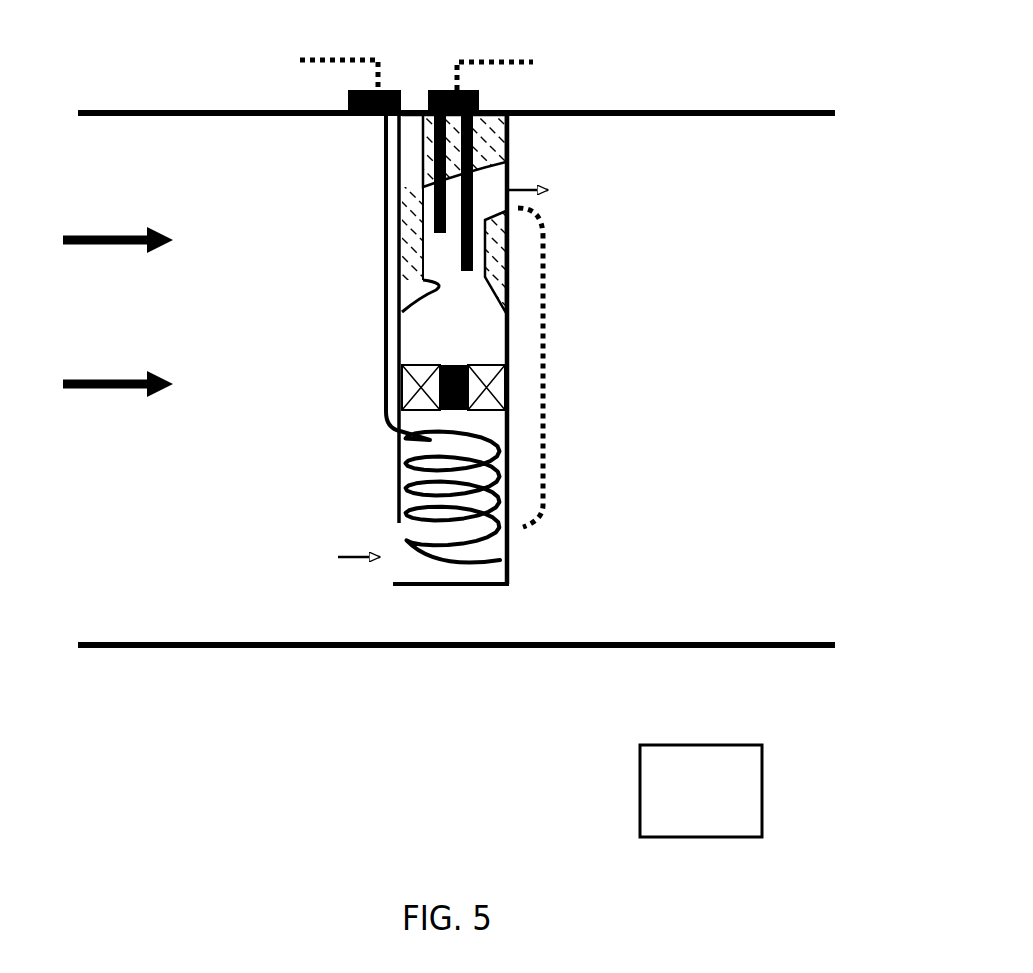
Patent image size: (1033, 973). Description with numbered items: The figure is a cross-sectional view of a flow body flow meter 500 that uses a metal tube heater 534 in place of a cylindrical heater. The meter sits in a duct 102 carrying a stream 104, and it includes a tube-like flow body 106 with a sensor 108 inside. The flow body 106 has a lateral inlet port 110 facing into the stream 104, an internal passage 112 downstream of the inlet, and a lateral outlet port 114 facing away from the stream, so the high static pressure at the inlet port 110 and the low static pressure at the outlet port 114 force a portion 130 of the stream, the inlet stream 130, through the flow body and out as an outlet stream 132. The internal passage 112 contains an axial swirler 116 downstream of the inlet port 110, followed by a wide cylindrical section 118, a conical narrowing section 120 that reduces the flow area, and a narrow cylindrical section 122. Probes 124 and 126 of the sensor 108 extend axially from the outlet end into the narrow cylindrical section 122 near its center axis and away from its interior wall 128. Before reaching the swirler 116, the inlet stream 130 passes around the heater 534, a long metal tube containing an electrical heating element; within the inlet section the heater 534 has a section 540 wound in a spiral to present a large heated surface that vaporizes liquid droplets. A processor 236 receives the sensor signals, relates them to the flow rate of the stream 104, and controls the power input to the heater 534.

The duct 102 is at (217, 648).
The stream 104 is at (95, 388).
The flow body 106 is at (423, 585).
The sensor 108 is at (447, 93).
The inlet port 110 is at (385, 573).
The internal passage 112 is at (566, 366).
The outlet port 114 is at (512, 170).
The axial swirler 116 is at (487, 395).
The wide cylindrical section 118 is at (463, 345).
The narrowing section 120 is at (464, 304).
The narrow cylindrical section 122 is at (440, 260).
The probe 124 is at (440, 222).
The probe 126 is at (468, 258).
The interior wall 128 is at (440, 277).
The inlet stream 130 is at (362, 558).
The outlet stream 132 is at (528, 190).
The processor 236 is at (640, 792).
The flow body flow meter 500 is at (324, 195).
The heater 534 is at (386, 467).
The spirally wound section 540 is at (413, 492).